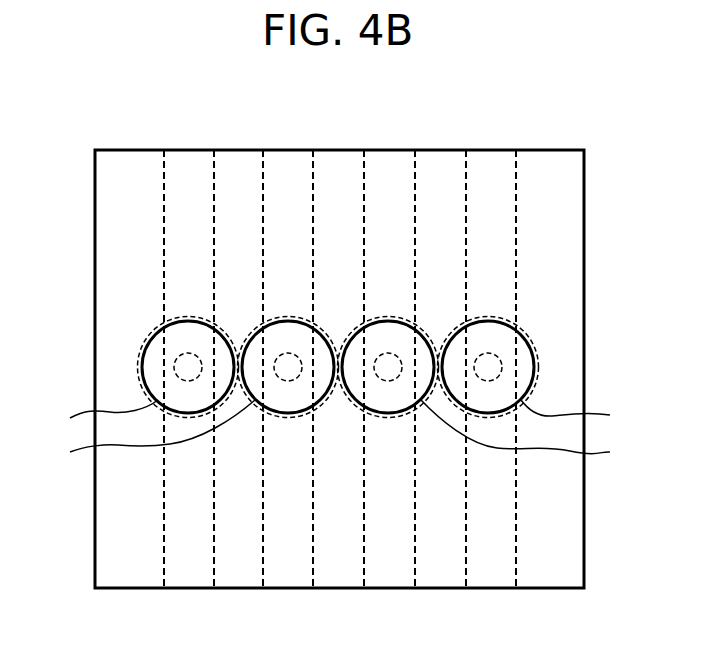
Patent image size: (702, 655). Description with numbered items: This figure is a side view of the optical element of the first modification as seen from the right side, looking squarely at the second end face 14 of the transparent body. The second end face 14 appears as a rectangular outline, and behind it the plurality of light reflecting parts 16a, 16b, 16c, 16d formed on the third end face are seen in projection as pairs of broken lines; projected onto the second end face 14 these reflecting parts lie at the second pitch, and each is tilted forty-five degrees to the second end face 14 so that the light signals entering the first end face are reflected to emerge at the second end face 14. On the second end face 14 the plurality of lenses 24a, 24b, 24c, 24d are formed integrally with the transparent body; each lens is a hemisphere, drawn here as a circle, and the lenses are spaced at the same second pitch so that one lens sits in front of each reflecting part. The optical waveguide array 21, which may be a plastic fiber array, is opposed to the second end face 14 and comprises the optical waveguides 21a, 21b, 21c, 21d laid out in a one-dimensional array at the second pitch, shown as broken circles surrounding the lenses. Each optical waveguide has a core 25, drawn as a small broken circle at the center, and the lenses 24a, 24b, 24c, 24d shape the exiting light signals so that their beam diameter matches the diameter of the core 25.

The second end face 14 is at (573, 229).
The light reflecting part 16a is at (185, 165).
The light reflecting part 16b is at (285, 165).
The light reflecting part 16c is at (387, 165).
The light reflecting part 16d is at (487, 165).
The optical waveguide array 21 is at (568, 344).
The optical waveguide 21a is at (190, 317).
The optical waveguide 21b is at (290, 317).
The optical waveguide 21c is at (390, 317).
The optical waveguide 21d is at (490, 317).
The lens 24a is at (92, 415).
The lens 24b is at (141, 432).
The lens 24c is at (535, 432).
The lens 24d is at (586, 415).
The core 25 is at (176, 359).